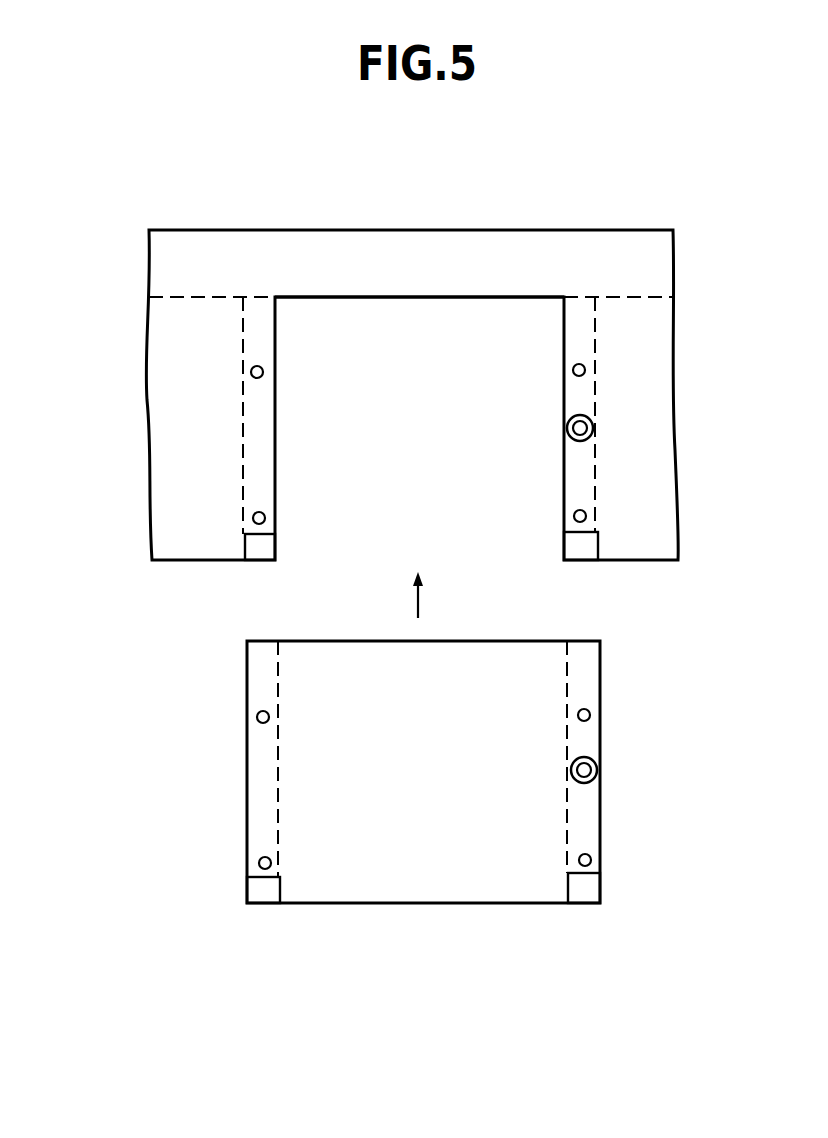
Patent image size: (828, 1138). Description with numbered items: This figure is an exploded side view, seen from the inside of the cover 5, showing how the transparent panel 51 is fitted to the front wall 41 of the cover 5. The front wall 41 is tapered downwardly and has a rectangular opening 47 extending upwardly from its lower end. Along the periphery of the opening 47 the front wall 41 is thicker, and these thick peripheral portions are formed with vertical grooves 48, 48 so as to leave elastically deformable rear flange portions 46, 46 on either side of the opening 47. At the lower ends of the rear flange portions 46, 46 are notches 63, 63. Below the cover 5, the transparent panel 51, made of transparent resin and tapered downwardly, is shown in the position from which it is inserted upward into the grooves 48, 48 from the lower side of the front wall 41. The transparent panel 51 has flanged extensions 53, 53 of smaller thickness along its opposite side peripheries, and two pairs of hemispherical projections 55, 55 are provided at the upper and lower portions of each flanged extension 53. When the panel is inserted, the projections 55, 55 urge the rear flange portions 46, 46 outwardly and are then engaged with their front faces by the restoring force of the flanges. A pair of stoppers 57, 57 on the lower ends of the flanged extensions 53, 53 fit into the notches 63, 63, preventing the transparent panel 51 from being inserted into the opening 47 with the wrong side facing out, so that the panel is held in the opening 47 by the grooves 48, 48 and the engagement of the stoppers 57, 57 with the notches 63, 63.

The cover 5 is at (355, 229).
The front wall 41 is at (160, 340).
The opening 47 is at (442, 311).
The rear flange portions 46 is at (262, 468).
The vertical grooves 48 is at (258, 401).
The notches 63 is at (262, 548).
The transparent panel 51 is at (403, 905).
The flanged extensions 53 is at (258, 782).
The hemispherical projections 55 is at (257, 717).
The stoppers 57 is at (267, 896).